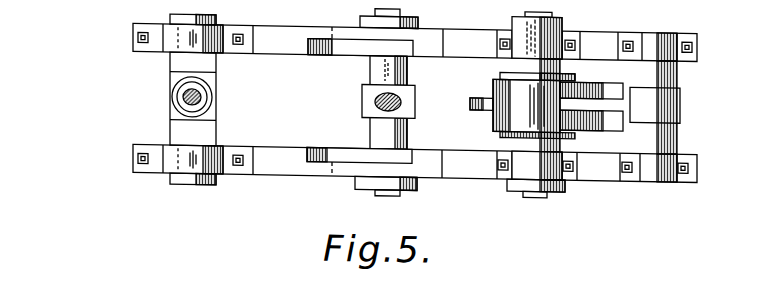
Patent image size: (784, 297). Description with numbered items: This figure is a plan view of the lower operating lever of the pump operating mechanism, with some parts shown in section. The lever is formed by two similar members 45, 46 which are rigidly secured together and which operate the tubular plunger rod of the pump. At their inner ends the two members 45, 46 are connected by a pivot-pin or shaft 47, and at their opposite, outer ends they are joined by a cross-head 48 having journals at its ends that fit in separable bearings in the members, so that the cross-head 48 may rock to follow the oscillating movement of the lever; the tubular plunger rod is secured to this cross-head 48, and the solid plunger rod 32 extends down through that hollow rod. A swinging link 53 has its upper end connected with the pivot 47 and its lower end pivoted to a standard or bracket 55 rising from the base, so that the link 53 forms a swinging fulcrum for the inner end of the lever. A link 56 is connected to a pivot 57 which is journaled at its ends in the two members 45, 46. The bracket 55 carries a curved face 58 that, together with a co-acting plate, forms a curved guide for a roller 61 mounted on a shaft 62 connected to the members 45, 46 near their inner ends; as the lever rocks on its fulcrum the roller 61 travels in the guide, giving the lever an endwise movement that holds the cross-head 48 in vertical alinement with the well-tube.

The solid plunger rod 32 is at (178, 99).
The lower operating lever member 45 is at (278, 153).
The lower operating lever member 46 is at (292, 32).
The pivot-pin or shaft 47 is at (657, 68).
The cross-head 48 is at (186, 62).
The swinging link 53 is at (662, 95).
The standard or bracket 55 is at (617, 114).
The link 56 is at (375, 93).
The pivot 57 is at (388, 60).
The curved face 58 is at (542, 110).
The roller 61 is at (530, 108).
The shaft 62 is at (540, 56).